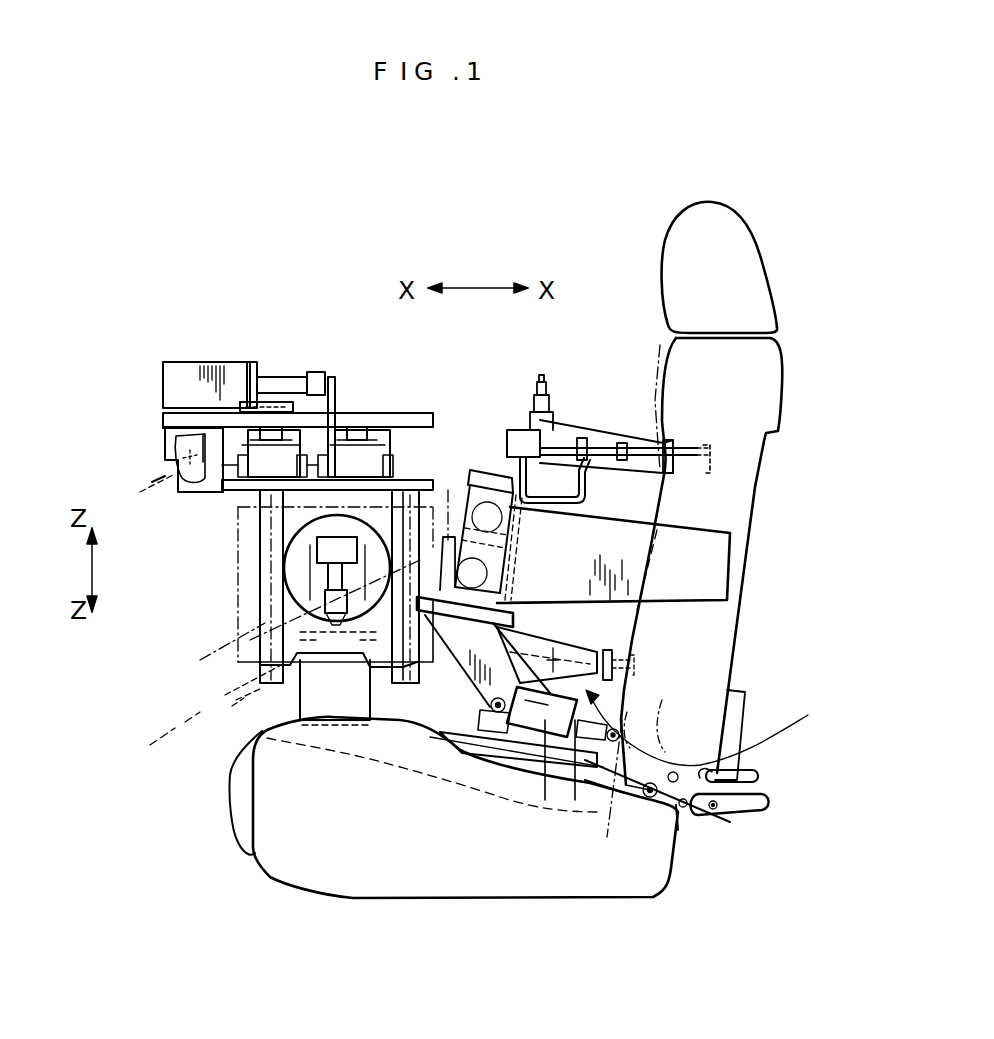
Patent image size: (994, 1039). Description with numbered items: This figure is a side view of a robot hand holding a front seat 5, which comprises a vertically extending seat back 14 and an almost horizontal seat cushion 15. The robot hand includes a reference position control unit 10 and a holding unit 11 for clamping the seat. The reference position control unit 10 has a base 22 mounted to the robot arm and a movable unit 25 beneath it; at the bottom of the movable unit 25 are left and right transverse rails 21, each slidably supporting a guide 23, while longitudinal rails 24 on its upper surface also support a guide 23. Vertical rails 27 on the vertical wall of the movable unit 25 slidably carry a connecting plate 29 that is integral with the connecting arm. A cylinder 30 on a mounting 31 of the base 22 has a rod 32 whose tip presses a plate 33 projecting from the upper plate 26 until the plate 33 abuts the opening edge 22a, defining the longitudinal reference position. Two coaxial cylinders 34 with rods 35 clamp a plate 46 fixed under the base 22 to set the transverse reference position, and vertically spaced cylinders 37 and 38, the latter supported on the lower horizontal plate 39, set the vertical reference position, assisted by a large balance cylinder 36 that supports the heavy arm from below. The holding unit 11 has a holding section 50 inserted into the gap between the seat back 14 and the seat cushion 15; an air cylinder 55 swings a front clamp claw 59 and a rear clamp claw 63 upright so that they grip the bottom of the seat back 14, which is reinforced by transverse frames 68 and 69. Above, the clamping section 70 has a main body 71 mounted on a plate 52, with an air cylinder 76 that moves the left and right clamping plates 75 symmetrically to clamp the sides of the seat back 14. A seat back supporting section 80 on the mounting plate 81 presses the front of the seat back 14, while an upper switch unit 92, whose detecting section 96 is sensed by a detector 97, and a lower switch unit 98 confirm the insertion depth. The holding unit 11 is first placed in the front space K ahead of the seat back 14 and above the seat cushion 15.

The front seat 5 is at (788, 305).
The seat back 14 is at (765, 368).
The seat cushion 15 is at (278, 858).
The reference position control unit 10 is at (173, 626).
The holding unit 11 is at (578, 625).
The rails 21 is at (268, 427).
The base 22 is at (433, 413).
The opening edge (stopper portion) 22a is at (295, 407).
The guide 23 is at (255, 468).
The rails 24 is at (440, 448).
The movable unit 25 is at (236, 540).
The upper plate 26 is at (240, 490).
The rails 27 is at (262, 628).
The connecting plate 29 is at (232, 636).
The cylinder 30 is at (182, 362).
The mounting 31 is at (252, 362).
The rod 32 is at (288, 377).
The plate 33 is at (332, 377).
The cylinders 34 is at (173, 448).
The rods 35 is at (148, 495).
The balance cylinder 36 is at (278, 718).
The cylinder 37 is at (322, 562).
The cylinder 38 is at (312, 697).
The lower horizontal plate 39 is at (160, 738).
The plate 46 is at (176, 436).
The holding section 50 is at (655, 700).
The plate 52 is at (513, 618).
The air cylinder 55 is at (485, 752).
The front clamp claw 59 is at (607, 830).
The rear clamp claw 63 is at (755, 788).
The frame 68 is at (678, 722).
The frame 69 is at (663, 730).
The clamping section 70 is at (712, 523).
The main body 71 is at (470, 470).
The clamping plates 75 is at (725, 570).
The air cylinder 76 is at (507, 446).
The seat back supporting section 80 is at (655, 440).
The mounting plate 81 is at (553, 505).
The upper switch unit 92 is at (603, 428).
The detecting section 96 is at (555, 480).
The detector 97 is at (530, 412).
The lower switch unit 98 is at (615, 660).
The front space K is at (701, 728).